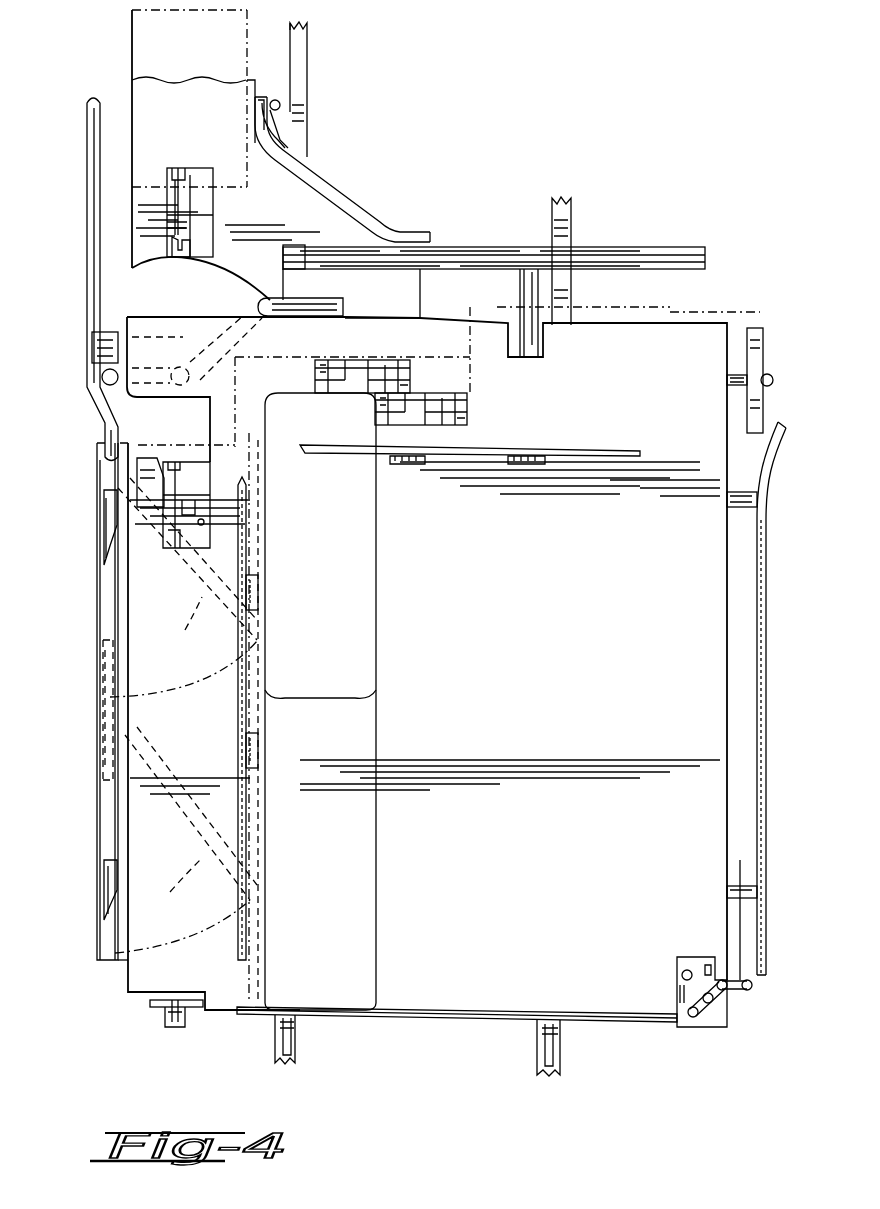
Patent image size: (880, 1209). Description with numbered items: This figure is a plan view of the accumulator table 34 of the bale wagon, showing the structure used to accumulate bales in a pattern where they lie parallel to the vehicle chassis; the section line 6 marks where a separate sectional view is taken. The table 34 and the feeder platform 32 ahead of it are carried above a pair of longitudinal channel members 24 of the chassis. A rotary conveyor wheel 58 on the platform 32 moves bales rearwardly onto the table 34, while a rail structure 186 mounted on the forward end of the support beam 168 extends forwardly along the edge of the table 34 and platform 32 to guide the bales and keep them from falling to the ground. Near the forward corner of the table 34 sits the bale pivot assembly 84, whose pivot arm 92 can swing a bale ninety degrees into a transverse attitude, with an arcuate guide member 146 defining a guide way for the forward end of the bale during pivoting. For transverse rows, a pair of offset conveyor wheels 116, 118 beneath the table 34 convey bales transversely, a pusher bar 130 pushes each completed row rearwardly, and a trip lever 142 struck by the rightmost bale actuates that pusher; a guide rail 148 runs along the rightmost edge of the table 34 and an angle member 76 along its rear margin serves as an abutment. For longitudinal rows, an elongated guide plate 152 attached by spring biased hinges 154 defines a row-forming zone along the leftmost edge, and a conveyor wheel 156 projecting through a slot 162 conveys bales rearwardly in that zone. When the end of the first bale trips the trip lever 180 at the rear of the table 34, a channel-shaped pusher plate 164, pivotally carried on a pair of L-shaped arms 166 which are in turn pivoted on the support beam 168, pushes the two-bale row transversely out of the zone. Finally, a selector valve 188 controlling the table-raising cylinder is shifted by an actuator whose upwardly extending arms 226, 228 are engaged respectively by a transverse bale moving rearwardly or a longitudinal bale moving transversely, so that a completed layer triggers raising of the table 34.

The section line 6- 6 is at (764, 318).
The longitudinal channel member 24 is at (307, 68).
The feeder platform 32 is at (285, 197).
The accumulator table 34 is at (528, 655).
The rotary conveyor wheel 58 is at (198, 244).
The angle member 76 is at (440, 1010).
The bale pivot assembly 84 is at (194, 345).
The pivot arm 92 is at (260, 304).
The offset conveyor wheel 116 is at (315, 383).
The offset conveyor wheel 118 is at (462, 412).
The pusher bar 130 is at (463, 249).
The trip lever 142 is at (763, 372).
The arcuate guide member 146 is at (340, 178).
The guide rail 148 is at (764, 624).
The elongated guide plate 152 is at (237, 690).
The spring biased hinge 154 is at (258, 594).
The conveyor wheel 156 is at (200, 470).
The slot 162 is at (204, 521).
The pusher plate 164 is at (265, 670).
The L-shaped arm 166 is at (98, 548).
The support beam 168 is at (97, 634).
The trip lever 180 is at (178, 1003).
The rail structure 186 is at (87, 232).
The selector valve 188 is at (700, 958).
The arm 226 is at (748, 990).
The arm 228 is at (705, 1015).